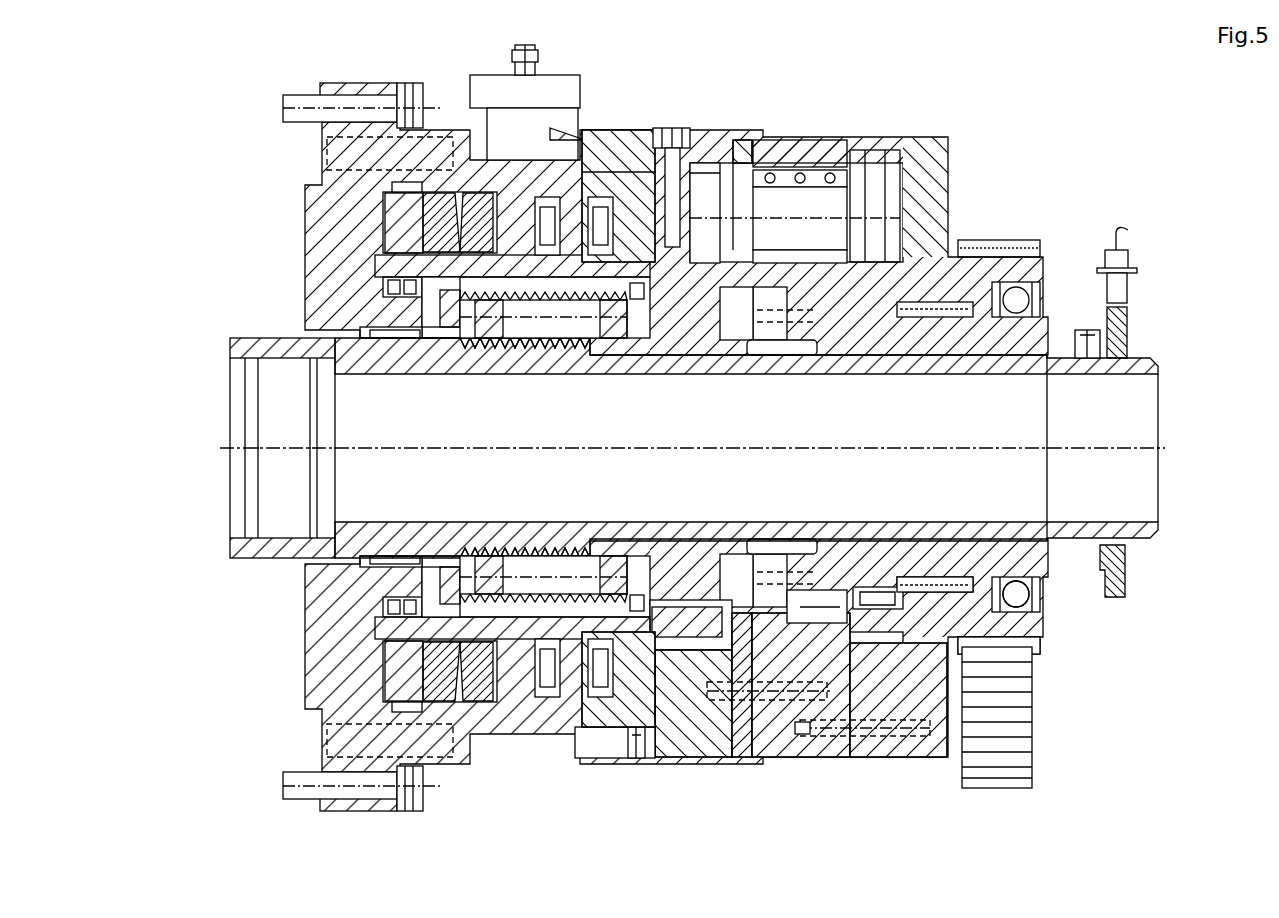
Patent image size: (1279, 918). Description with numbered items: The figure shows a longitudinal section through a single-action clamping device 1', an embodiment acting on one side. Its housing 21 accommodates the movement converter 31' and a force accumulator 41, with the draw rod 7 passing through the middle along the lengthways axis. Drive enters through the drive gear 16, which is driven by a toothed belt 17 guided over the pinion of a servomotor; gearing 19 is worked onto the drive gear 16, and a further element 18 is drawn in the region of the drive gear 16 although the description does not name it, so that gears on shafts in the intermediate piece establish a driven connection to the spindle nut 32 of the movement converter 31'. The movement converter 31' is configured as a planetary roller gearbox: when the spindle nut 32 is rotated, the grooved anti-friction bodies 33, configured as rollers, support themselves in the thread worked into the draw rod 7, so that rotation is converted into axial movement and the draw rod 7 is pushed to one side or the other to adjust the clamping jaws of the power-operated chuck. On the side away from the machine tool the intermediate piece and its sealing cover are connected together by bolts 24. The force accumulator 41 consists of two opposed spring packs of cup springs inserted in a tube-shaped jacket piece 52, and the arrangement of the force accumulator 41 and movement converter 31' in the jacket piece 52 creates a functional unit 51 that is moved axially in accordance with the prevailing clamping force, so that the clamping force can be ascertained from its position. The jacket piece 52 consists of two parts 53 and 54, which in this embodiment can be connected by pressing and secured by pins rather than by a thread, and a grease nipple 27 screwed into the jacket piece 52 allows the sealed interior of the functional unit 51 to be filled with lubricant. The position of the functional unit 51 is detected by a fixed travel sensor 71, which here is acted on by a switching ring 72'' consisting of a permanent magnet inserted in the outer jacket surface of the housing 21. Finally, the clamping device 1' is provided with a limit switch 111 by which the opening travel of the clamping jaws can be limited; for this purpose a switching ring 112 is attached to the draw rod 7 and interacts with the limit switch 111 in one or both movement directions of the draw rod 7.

The single-action clamping device 1' is at (608, 472).
The draw rod 7 is at (1140, 356).
The movement converter 31' is at (692, 448).
The functional unit 51 is at (412, 82).
The jacket piece 52 is at (484, 724).
The part of the jacket piece 53 is at (440, 186).
The force accumulator 41 is at (397, 222).
The travel sensor 71 is at (490, 128).
The switching ring 72'' is at (580, 83).
The part of the jacket piece 54 is at (630, 178).
The housing 21 is at (733, 127).
The grease nipple 27 is at (683, 128).
The spindle nut 32 is at (506, 350).
The anti-friction bodies 33 is at (558, 320).
The bearing housing 18 is at (1003, 652).
The gearing 19 is at (1003, 620).
The drive gear 16 is at (1020, 637).
The toothed belt 17 is at (1018, 728).
The bolts 24 is at (938, 732).
The limit switch 111 is at (1130, 292).
The switching ring 112 is at (1128, 580).